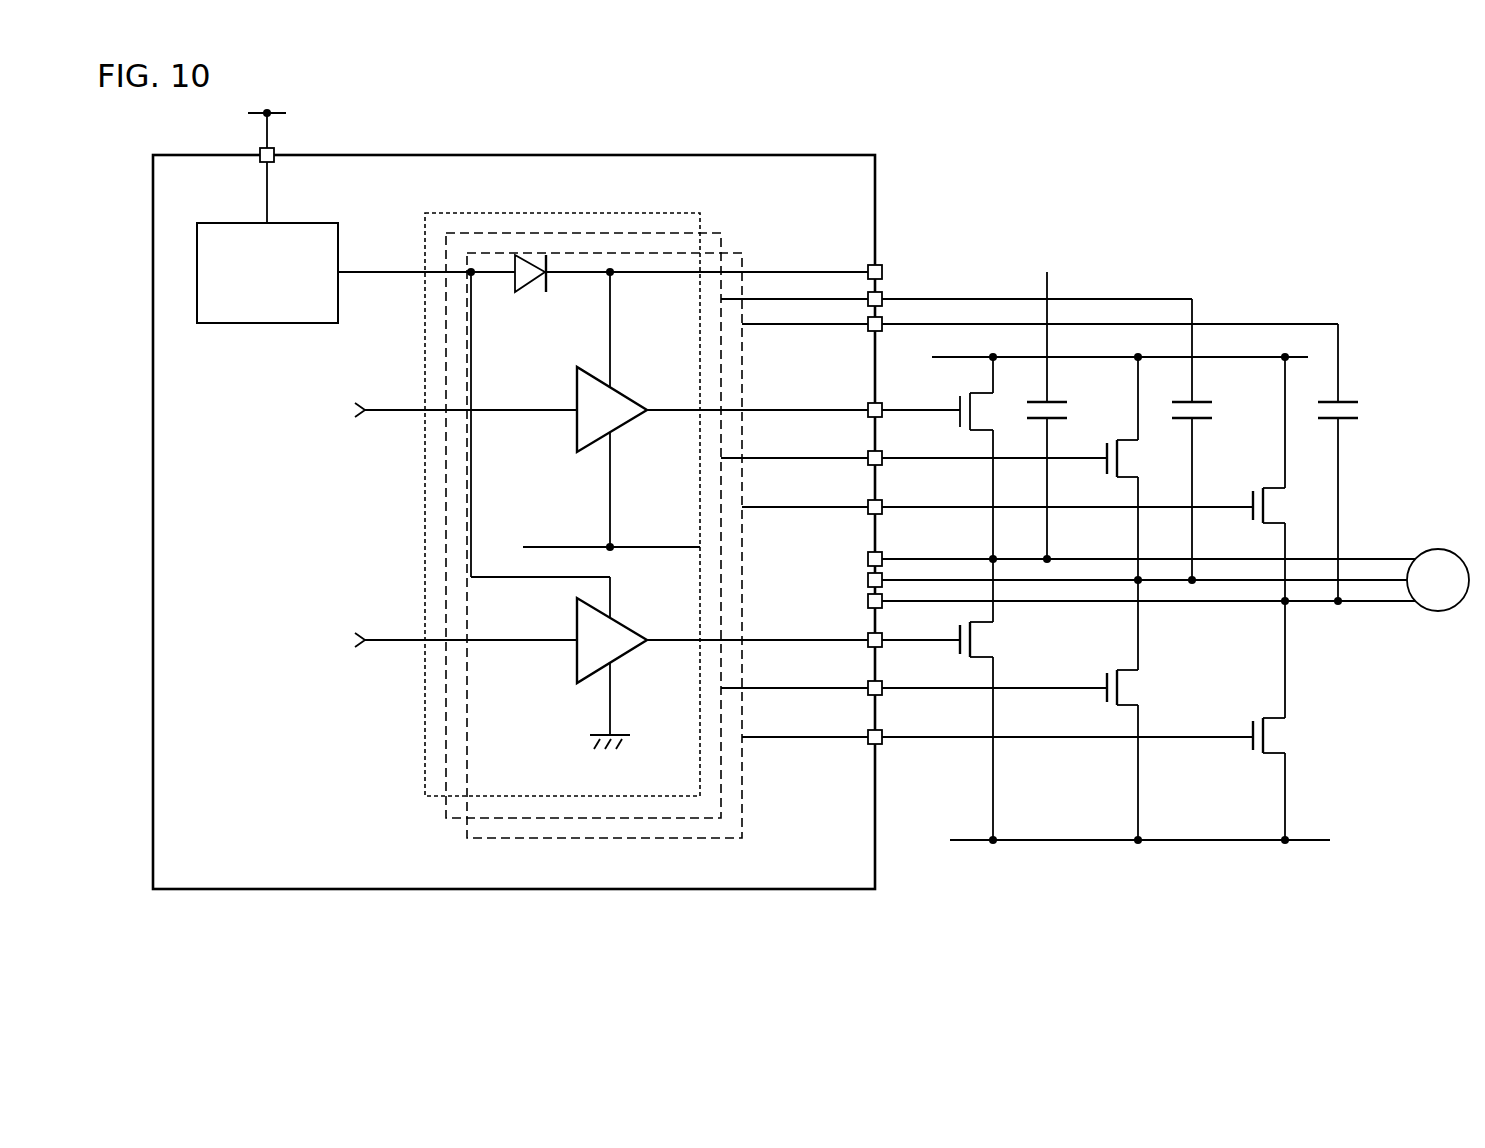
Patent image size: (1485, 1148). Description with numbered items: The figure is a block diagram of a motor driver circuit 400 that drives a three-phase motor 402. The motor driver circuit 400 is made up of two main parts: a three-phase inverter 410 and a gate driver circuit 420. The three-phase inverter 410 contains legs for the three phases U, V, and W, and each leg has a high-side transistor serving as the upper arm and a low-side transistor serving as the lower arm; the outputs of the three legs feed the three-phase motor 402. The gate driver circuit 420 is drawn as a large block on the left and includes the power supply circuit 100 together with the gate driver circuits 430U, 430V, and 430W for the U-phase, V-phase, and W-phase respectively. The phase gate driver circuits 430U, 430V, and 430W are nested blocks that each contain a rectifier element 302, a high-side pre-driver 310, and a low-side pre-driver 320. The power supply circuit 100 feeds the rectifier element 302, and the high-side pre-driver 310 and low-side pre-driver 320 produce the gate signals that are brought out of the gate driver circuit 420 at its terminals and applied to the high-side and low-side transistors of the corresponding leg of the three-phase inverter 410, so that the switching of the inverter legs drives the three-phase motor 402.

The power supply circuit 100 is at (300, 223).
The rectifier element 302 is at (549, 262).
The high-side pre-driver 310 is at (650, 378).
The low-side pre-driver 320 is at (623, 654).
The motor driver circuit 400 is at (1464, 189).
The three-phase motor 402 is at (1437, 548).
The three-phase inverter 410 is at (1313, 892).
The gate driver circuit 420 is at (876, 190).
The U-phase gate driver circuit 430U is at (608, 212).
The V-phase gate driver circuit 430V is at (704, 233).
The W-phase gate driver circuit 430W is at (742, 255).